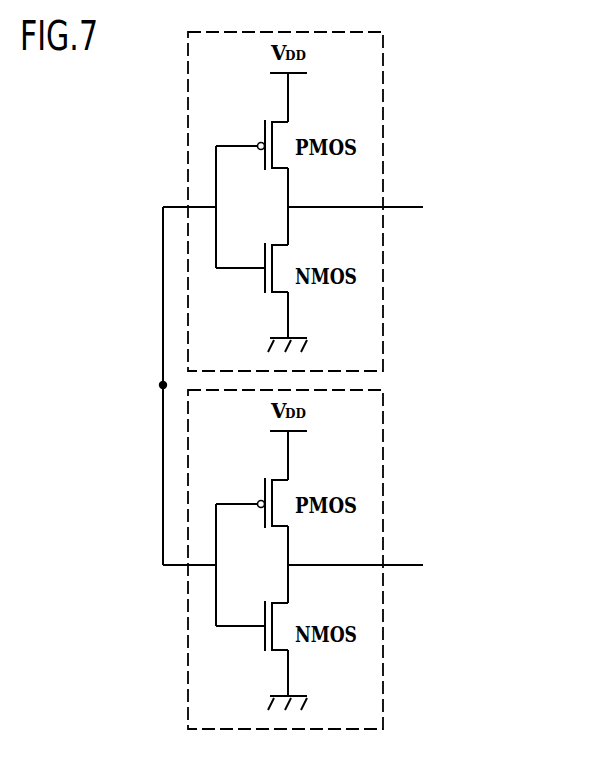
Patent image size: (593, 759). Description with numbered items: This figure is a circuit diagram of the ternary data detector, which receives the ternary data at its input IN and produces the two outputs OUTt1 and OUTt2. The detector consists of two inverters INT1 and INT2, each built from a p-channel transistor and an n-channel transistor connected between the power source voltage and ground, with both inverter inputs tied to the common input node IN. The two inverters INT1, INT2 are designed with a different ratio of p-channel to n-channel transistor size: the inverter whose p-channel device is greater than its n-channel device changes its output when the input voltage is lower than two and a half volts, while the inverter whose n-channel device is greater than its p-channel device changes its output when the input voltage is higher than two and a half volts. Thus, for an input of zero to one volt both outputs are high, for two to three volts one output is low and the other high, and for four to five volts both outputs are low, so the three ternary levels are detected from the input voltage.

The input signal node IN is at (163, 385).
The inverter INT1 is at (383, 78).
The inverter INT2 is at (383, 437).